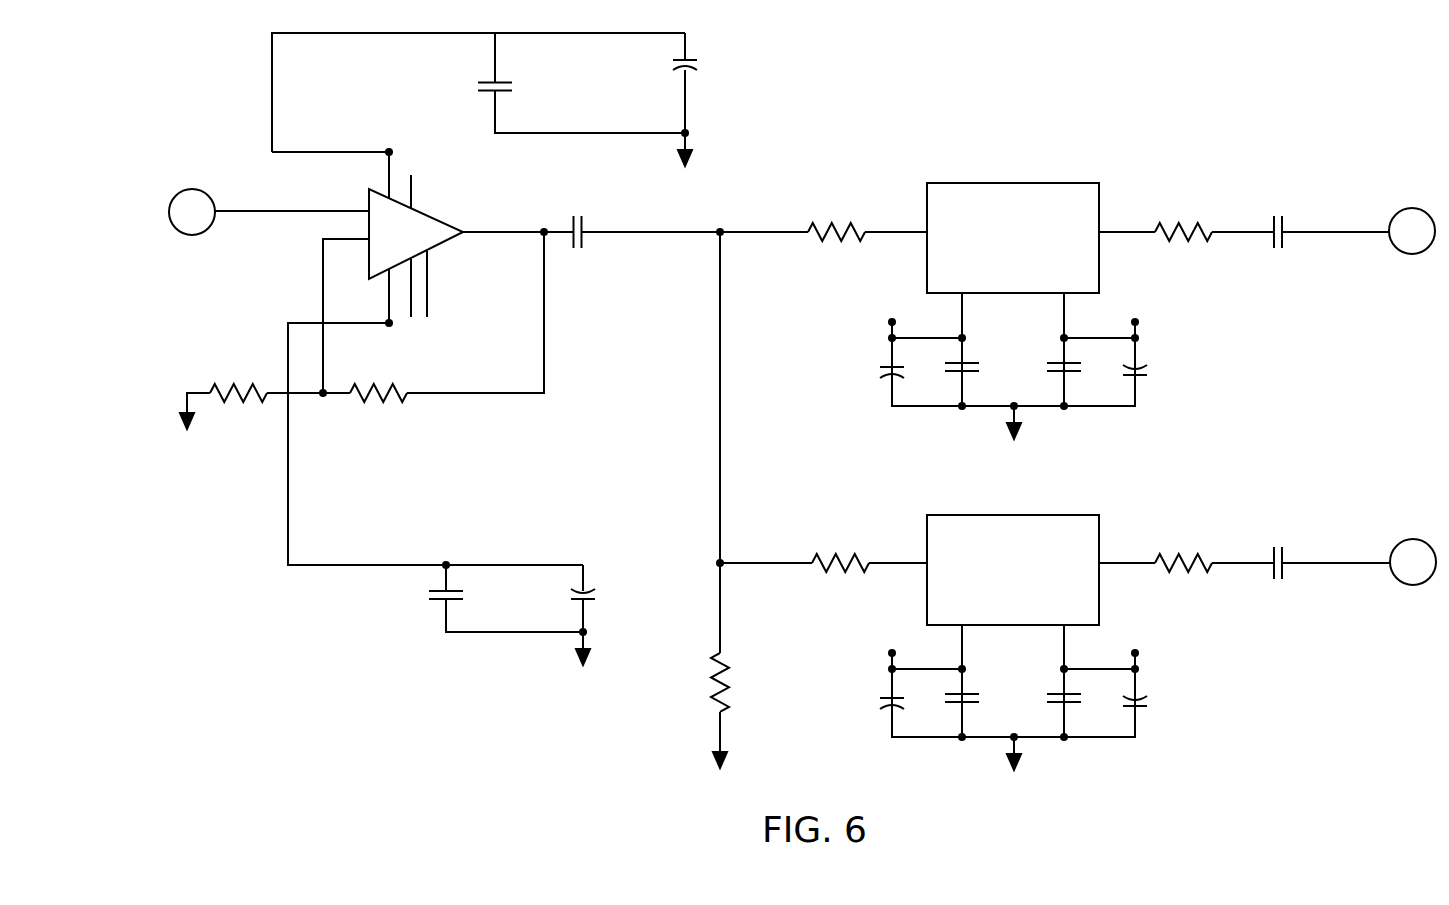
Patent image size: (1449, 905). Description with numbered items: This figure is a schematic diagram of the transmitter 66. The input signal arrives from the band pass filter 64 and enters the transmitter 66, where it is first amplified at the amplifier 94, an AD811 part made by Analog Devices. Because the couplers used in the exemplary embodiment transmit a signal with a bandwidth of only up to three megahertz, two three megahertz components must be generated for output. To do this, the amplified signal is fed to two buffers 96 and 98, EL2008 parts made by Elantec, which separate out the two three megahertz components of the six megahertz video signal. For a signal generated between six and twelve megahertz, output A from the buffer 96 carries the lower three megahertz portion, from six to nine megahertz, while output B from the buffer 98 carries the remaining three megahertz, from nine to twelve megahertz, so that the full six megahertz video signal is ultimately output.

The band pass filter 64 is at (183, 183).
The amplifier 94 is at (428, 232).
The buffer 96 is at (1013, 195).
The buffer 98 is at (1014, 528).
The transmitter 66 is at (1226, 806).